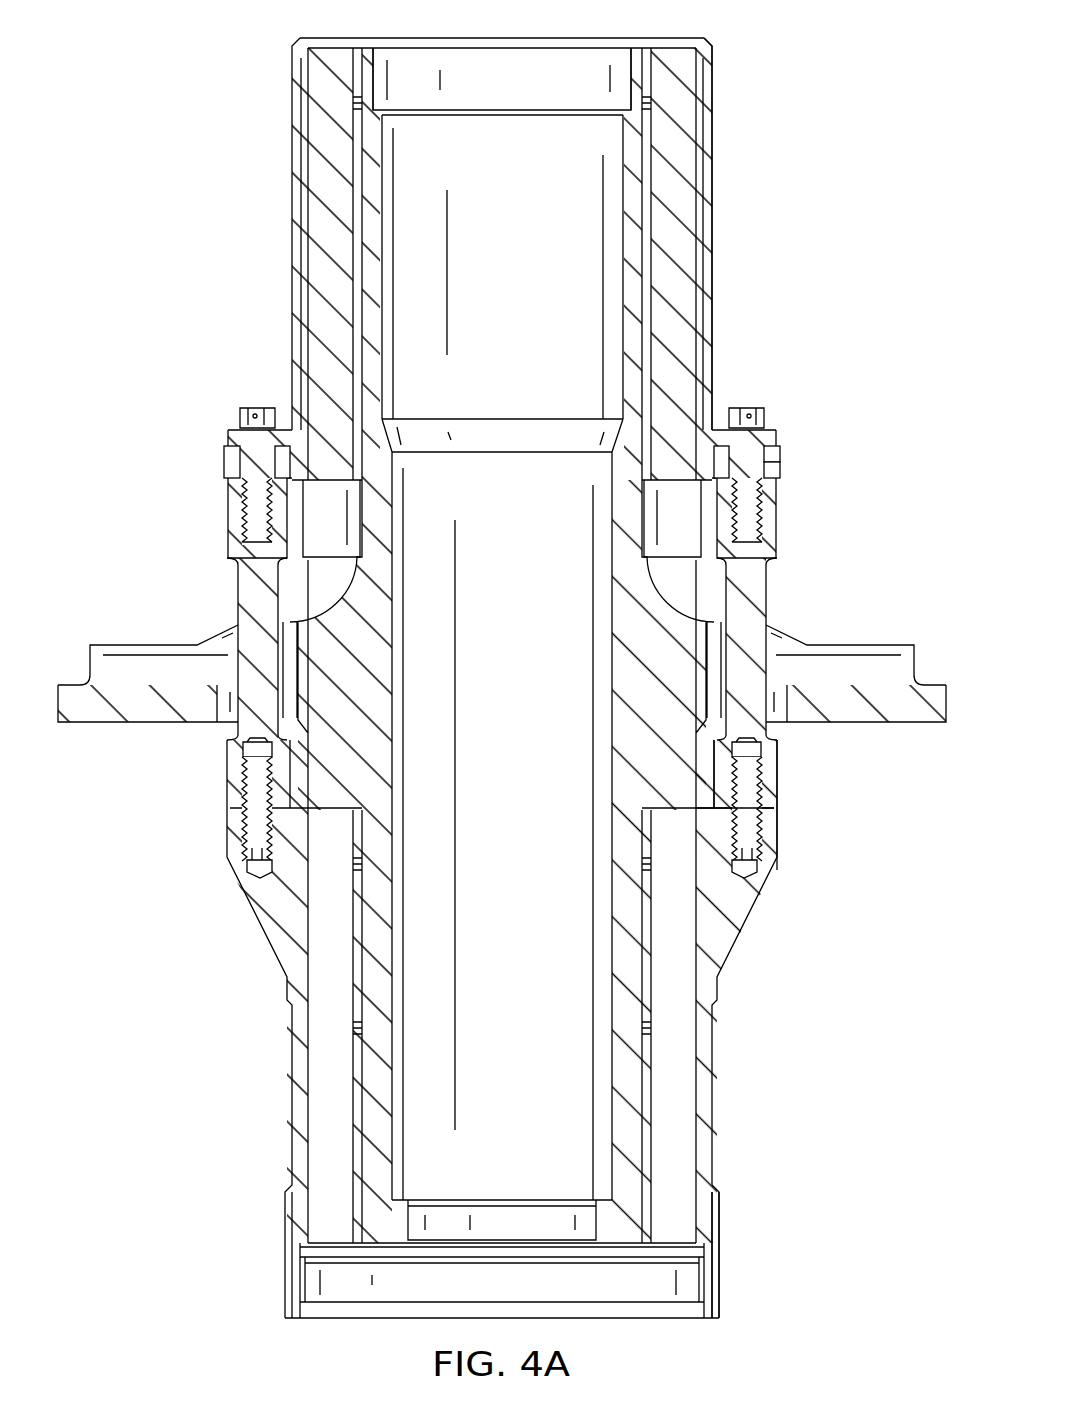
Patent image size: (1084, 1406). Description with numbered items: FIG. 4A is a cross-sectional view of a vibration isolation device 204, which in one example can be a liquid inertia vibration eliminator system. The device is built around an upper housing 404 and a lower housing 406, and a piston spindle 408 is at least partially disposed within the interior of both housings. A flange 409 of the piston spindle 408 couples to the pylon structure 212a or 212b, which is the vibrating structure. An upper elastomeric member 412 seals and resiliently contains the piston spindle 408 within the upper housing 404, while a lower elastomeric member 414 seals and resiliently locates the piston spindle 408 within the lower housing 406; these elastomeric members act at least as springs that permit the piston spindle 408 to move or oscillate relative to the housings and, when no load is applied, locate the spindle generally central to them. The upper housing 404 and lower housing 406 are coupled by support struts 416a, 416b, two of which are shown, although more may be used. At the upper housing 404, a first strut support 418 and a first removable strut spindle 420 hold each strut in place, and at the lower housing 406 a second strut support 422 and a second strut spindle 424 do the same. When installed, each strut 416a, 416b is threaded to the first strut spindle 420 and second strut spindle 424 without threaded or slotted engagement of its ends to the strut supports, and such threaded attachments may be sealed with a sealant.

The vibration isolation device 204 is at (736, 54).
The upper housing 404 is at (713, 125).
The piston spindle 408 is at (645, 215).
The upper elastomeric member 412 is at (713, 282).
The first strut support 418 is at (783, 464).
The first removable strut spindle 420 is at (783, 486).
The support strut 416a is at (779, 520).
The support strut 416b is at (224, 522).
The flange 409 is at (855, 645).
The pylon structure 212a is at (846, 724).
The pylon structure 212b is at (138, 724).
The second strut support 422 is at (778, 826).
The second strut spindle 424 is at (762, 842).
The lower housing 406 is at (714, 1040).
The lower elastomeric member 414 is at (714, 1150).